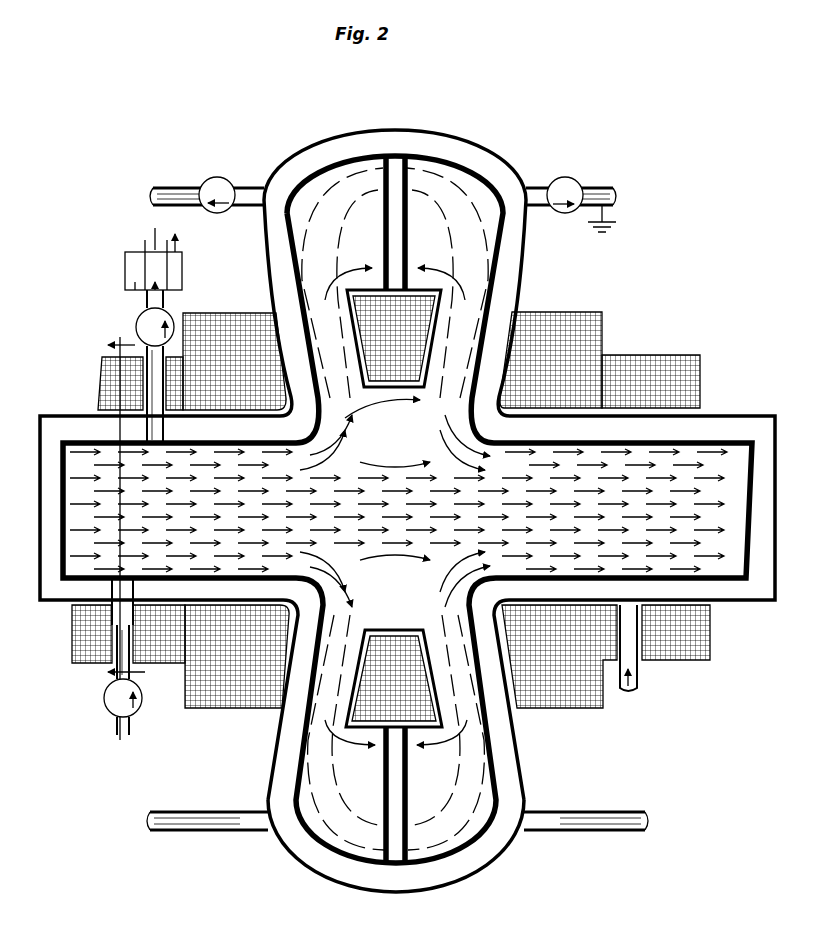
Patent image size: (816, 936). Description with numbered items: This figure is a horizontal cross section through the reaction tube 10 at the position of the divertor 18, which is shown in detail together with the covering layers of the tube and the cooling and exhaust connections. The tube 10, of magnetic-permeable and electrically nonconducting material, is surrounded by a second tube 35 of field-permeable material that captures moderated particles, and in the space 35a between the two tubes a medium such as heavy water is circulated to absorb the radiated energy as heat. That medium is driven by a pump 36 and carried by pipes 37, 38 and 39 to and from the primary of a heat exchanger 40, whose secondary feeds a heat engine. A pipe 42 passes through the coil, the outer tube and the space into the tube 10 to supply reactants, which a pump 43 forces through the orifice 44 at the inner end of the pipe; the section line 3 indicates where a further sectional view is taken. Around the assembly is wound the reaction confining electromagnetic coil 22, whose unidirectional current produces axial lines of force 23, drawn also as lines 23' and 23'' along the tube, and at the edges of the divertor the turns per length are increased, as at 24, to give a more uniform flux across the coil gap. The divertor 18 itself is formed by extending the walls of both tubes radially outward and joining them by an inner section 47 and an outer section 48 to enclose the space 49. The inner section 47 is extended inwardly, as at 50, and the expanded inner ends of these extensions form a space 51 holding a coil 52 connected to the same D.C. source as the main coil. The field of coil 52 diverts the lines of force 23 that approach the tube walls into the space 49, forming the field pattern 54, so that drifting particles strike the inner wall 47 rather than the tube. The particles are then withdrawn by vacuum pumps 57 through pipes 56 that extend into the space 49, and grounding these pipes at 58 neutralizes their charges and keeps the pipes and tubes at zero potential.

The section line 3- 3 is at (113, 538).
The tube 10 is at (62, 448).
The divertor 18 is at (472, 136).
The reaction confining electromagnetic coil 22 is at (648, 361).
The lines of force 23 is at (289, 507).
The flow arrows (right upper) 23' is at (614, 478).
The flow arrows (right lower) 23'' is at (613, 543).
The thickened coil portions 24 is at (241, 313).
The second tube 35 is at (68, 414).
The space 35a is at (66, 430).
The pump 36 is at (140, 317).
The pipe 37 is at (146, 350).
The pipe 38 is at (167, 300).
The pipe 39 is at (148, 238).
The heat exchanger 40 is at (183, 272).
The pipe 42 is at (137, 678).
The pump 43 is at (103, 710).
The orifice 44 is at (137, 602).
The inner section 47 is at (366, 153).
The outer section 48 is at (331, 131).
The space 49 is at (362, 232).
The inward extension 50 is at (406, 158).
The space 51 is at (414, 291).
The coil 52 is at (427, 305).
The magnetic field pattern 54 is at (344, 406).
The pipes 56 is at (250, 188).
The vacuum pumps 57 is at (218, 177).
The ground 58 is at (612, 229).